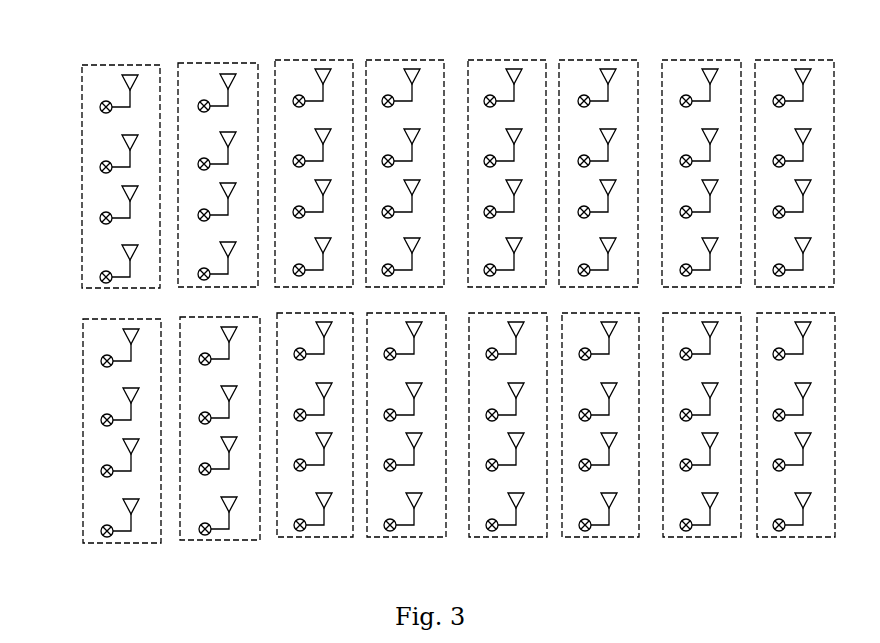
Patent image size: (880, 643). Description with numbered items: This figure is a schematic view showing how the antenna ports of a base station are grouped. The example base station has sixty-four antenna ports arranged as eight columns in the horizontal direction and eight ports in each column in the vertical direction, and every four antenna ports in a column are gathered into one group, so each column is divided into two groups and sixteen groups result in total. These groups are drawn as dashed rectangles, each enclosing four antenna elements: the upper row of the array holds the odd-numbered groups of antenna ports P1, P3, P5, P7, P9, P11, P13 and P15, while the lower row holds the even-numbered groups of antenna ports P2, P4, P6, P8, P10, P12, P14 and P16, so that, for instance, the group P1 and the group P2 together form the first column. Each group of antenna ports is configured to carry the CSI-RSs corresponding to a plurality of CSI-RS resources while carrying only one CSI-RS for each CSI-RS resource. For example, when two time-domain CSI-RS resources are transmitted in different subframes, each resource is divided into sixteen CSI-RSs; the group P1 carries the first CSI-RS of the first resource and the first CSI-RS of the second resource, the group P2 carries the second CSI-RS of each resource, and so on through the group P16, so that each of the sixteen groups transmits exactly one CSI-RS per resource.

The group of antenna ports P1 is at (82, 128).
The group of antenna ports P2 is at (83, 382).
The group of antenna ports P3 is at (205, 63).
The group of antenna ports P4 is at (198, 540).
The group of antenna ports P5 is at (303, 60).
The group of antenna ports P6 is at (295, 537).
The group of antenna ports P7 is at (390, 60).
The group of antenna ports P8 is at (387, 537).
The group of antenna ports P9 is at (497, 60).
The group of antenna ports P10 is at (485, 537).
The group of antenna ports P11 is at (585, 60).
The group of antenna ports P12 is at (575, 537).
The group of antenna ports P13 is at (692, 60).
The group of antenna ports P14 is at (665, 537).
The group of antenna ports P15 is at (790, 60).
The group of antenna ports P16 is at (788, 537).